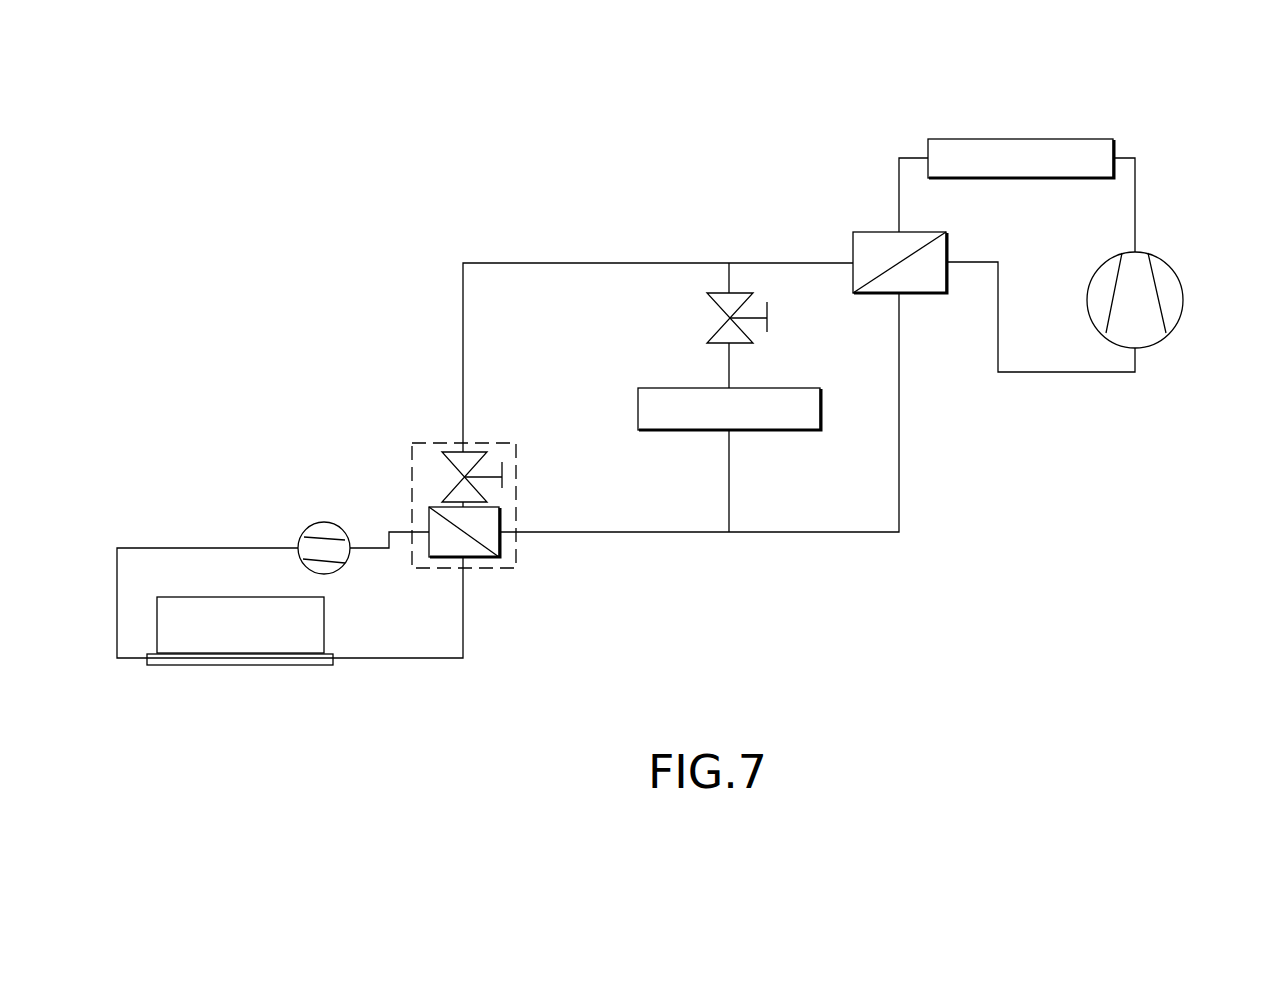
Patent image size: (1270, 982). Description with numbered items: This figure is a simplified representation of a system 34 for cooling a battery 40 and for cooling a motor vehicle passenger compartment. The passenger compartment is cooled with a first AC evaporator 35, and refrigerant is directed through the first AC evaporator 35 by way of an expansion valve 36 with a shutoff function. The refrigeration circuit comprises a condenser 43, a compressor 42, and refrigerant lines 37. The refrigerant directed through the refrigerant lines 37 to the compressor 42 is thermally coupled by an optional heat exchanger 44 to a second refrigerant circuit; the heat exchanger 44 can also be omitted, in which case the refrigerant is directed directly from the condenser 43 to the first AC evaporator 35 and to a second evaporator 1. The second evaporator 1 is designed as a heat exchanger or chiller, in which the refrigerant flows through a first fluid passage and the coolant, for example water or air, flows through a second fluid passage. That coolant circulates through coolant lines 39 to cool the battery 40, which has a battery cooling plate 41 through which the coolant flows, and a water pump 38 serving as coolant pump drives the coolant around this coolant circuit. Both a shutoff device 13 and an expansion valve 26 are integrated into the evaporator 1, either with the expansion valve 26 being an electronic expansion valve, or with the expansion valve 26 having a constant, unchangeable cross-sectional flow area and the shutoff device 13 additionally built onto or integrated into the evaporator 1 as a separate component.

The second evaporator 1 is at (493, 542).
The shutoff device 13 is at (453, 473).
The expansion valve 26 is at (457, 455).
The system 34 is at (962, 575).
The first AC evaporator 35 is at (638, 403).
The expansion valve 36 is at (718, 305).
The refrigerant lines 37 is at (590, 263).
The water pump 38 is at (345, 540).
The coolant lines 39 is at (160, 548).
The battery 40 is at (318, 615).
The battery cooling plate 41 is at (247, 665).
The compressor 42 is at (1157, 330).
The condenser 43 is at (1017, 139).
The heat exchanger 44 is at (858, 232).